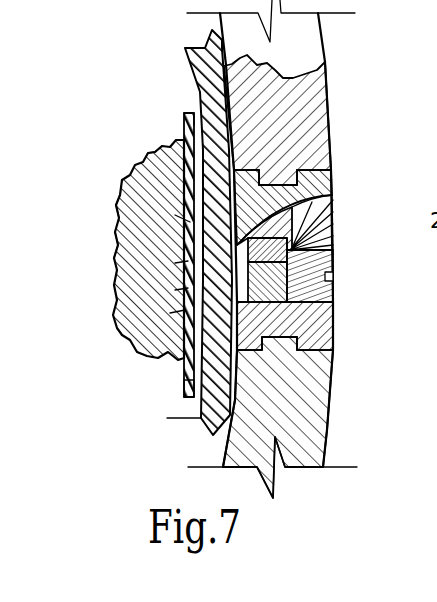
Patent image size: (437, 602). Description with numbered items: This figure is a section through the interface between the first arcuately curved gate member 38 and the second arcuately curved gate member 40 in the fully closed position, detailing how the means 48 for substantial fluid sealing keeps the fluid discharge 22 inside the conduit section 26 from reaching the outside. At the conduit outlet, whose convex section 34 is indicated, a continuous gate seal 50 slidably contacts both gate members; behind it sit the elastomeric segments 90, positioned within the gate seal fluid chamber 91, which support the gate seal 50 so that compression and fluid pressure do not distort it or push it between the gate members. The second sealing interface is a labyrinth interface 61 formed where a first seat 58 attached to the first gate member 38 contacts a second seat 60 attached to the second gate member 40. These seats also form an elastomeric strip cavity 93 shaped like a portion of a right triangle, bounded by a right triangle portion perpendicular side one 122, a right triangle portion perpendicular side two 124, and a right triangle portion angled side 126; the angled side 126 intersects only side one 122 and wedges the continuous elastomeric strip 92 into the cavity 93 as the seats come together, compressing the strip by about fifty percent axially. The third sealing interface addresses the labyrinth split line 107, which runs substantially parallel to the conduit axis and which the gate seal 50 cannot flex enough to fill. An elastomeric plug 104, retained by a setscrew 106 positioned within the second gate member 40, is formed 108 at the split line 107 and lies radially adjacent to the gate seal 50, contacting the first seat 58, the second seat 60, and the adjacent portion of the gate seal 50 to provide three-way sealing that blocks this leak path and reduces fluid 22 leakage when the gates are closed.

The fluid discharge 22 is at (81, 275).
The conduit section 26 is at (115, 250).
The convex section 34 is at (190, 222).
The first arcuately curved gate member 38 is at (330, 104).
The second arcuately curved gate member 40 is at (333, 398).
The means for substantial fluid sealing 48 is at (186, 262).
The gate seal 50 is at (189, 67).
The first seat 58 is at (333, 180).
The second seat 60 is at (333, 322).
The labyrinth interface 61 is at (333, 230).
The elastomeric segments 90 is at (183, 137).
The gate seal fluid chamber 91 is at (188, 112).
The elastomeric strip 92 is at (127, 177).
The elastomeric strip cavity 93 is at (153, 158).
The elastomeric plug 104 is at (186, 366).
The setscrew 106 is at (333, 264).
The labyrinth split line 107 is at (186, 311).
The formed 108 is at (188, 288).
The right triangle portion perpendicular side one 122 is at (292, 203).
The right triangle portion perpendicular side two 124 is at (119, 227).
The right triangle portion angled side 126 is at (333, 242).